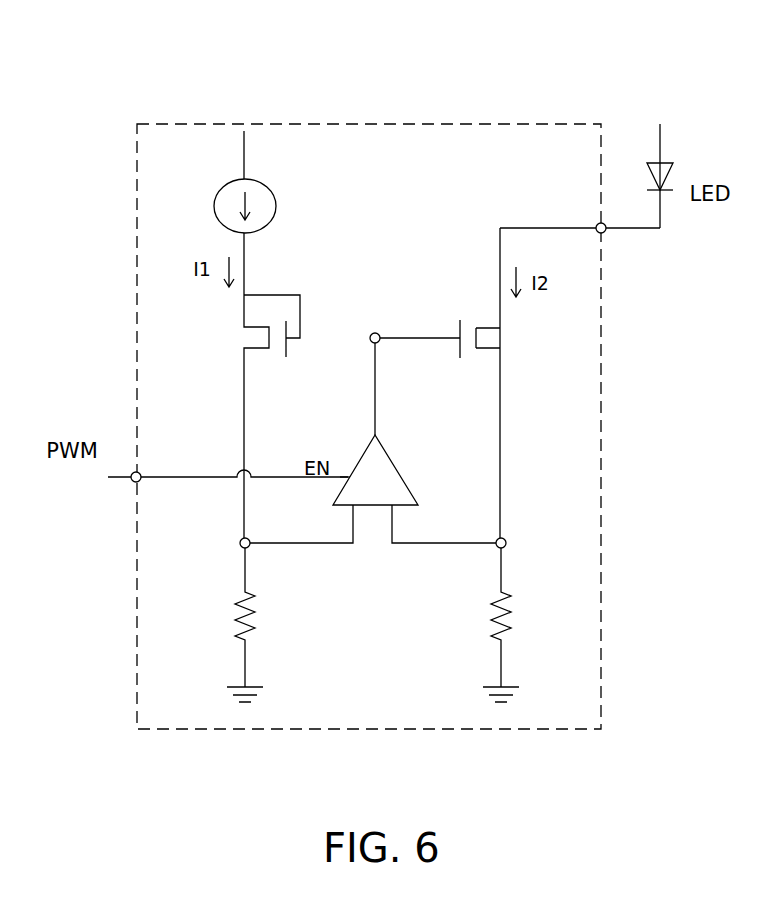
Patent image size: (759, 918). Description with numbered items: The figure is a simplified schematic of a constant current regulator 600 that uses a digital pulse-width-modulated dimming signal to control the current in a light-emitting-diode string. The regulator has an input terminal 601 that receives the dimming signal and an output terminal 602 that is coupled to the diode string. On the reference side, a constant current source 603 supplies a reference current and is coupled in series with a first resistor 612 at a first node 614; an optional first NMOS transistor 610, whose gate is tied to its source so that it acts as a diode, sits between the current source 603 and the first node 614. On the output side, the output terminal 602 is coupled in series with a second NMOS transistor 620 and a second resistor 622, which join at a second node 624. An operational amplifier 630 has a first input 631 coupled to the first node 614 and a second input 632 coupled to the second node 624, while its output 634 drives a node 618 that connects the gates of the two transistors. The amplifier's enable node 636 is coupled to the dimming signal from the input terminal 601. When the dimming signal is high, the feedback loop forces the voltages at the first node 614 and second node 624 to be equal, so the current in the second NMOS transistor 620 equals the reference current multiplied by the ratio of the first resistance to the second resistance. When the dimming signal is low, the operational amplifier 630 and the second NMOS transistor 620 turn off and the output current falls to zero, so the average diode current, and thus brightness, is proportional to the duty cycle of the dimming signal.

The constant current regulator 600 is at (491, 91).
The input terminal 601 is at (137, 468).
The output terminal 602 is at (605, 235).
The constant current source 603 is at (258, 179).
The first NMOS transistor 610 is at (246, 342).
The first resistor 612 is at (260, 617).
The first node 614 is at (250, 550).
The node 618 is at (374, 332).
The second NMOS transistor 620 is at (475, 320).
The second resistor 622 is at (488, 613).
The second node 624 is at (495, 552).
The operational amplifier 630 is at (393, 462).
The first input 631 is at (352, 507).
The second input 632 is at (397, 508).
The output 634 is at (373, 432).
The enable node 636 is at (347, 477).